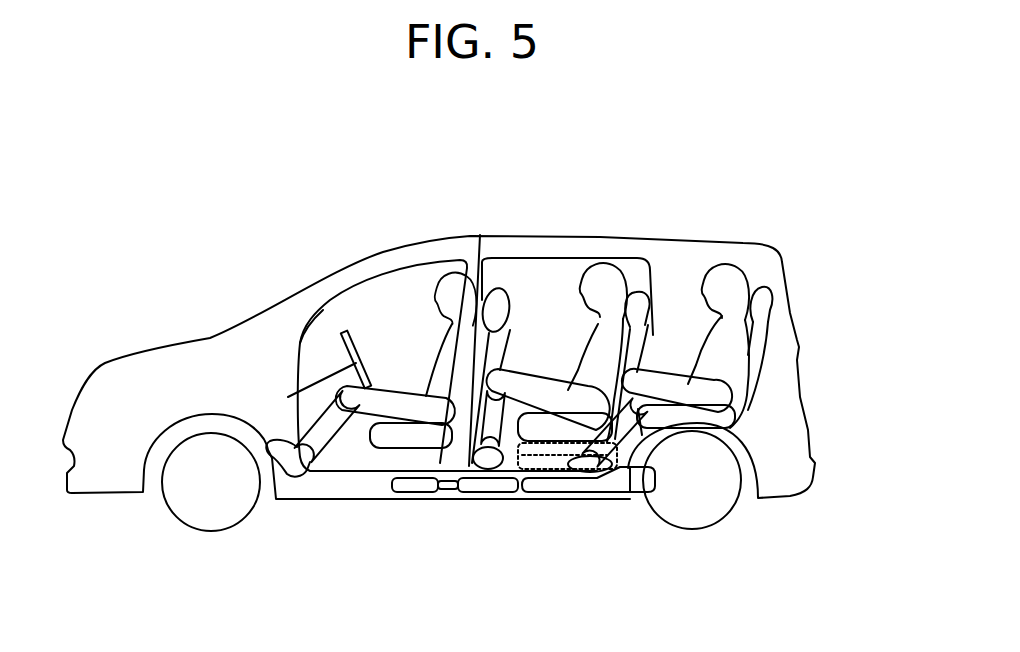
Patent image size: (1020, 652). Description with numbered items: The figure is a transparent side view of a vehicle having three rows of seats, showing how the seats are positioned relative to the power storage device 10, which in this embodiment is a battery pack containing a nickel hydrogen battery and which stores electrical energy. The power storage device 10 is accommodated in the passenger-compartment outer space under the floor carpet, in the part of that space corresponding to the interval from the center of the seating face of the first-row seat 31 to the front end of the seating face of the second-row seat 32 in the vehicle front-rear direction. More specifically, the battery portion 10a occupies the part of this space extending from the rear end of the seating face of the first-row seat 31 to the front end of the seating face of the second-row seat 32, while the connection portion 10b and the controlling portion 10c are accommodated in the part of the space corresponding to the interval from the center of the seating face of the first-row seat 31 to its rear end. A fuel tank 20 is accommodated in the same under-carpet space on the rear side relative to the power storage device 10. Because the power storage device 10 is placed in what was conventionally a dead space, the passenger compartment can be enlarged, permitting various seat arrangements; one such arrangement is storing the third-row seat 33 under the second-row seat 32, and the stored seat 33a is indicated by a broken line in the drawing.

The power storage device 10 is at (444, 558).
The battery portion 10a is at (489, 533).
The connection portion 10b is at (448, 489).
The controlling portion 10c is at (410, 492).
The fuel tank 20 is at (597, 492).
The first-row seat 31 is at (500, 292).
The second-row seat 32 is at (648, 341).
The third-row seat 33 is at (748, 372).
The stored seat 33a is at (617, 447).